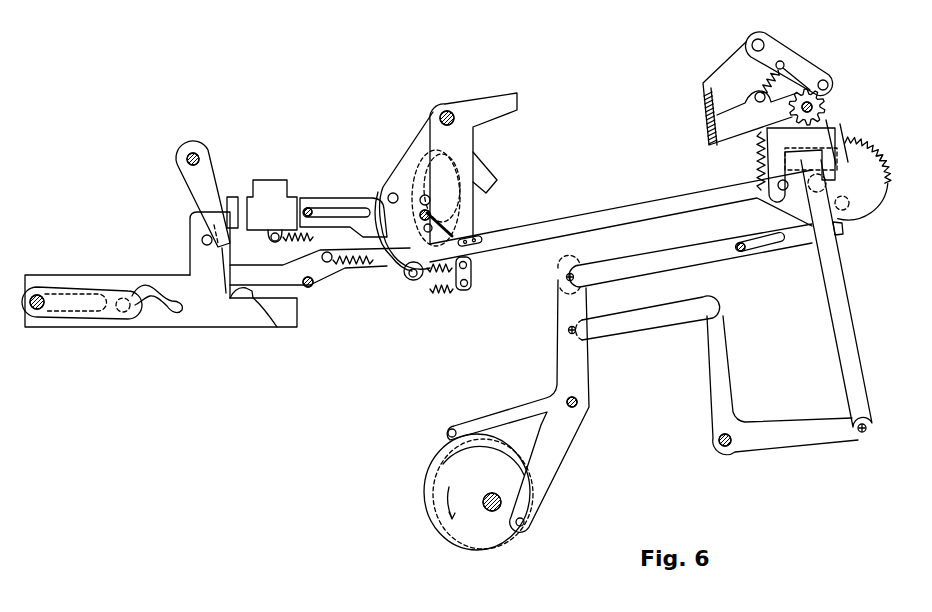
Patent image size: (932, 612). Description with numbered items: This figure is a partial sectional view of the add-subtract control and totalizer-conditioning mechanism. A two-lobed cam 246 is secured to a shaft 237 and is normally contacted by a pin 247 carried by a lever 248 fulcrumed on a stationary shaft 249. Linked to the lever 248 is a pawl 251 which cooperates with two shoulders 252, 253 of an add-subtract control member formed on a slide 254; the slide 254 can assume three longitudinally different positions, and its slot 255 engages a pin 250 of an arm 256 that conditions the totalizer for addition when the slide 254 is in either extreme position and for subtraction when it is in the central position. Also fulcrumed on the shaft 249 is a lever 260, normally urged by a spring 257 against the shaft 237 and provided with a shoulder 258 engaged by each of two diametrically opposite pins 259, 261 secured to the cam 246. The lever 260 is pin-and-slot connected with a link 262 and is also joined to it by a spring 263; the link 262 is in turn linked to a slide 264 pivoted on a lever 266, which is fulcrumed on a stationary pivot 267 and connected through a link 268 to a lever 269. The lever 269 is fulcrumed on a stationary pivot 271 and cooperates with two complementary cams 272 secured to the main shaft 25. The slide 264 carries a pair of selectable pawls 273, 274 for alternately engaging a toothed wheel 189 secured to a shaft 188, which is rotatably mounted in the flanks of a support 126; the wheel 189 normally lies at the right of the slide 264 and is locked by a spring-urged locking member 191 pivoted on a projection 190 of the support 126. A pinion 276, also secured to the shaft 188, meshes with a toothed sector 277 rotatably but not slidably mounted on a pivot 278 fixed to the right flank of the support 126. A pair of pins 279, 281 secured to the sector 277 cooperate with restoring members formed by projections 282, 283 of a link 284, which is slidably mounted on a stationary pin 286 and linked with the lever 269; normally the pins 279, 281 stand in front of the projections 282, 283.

The main shaft 25 is at (487, 511).
The support 126 is at (702, 132).
The shaft 188 is at (761, 102).
The toothed wheel 189 is at (828, 86).
The projection 190 is at (722, 80).
The locking member 191 is at (803, 65).
The shaft 237 is at (430, 215).
The two lobed cam 246 is at (393, 220).
The pin 247 is at (393, 193).
The lever 248 is at (418, 148).
The stationary shaft 249 is at (440, 116).
The pin 250 is at (128, 313).
The pawl 251 is at (313, 283).
The shoulder 252 is at (222, 322).
The shoulder 253 is at (272, 322).
The slide 254 is at (188, 323).
The slot 255 is at (160, 289).
The arm 256 is at (100, 321).
The spring 257 is at (432, 294).
The shoulder 258 is at (455, 235).
The pin 259 is at (475, 247).
The lever 260 is at (458, 144).
The pin 261 is at (431, 200).
The link 262 is at (641, 204).
The spring 263 is at (425, 279).
The slide 264 is at (845, 310).
The lever 266 is at (790, 428).
The stationary pivot 267 is at (729, 447).
The link 268 is at (645, 320).
The lever 269 is at (588, 376).
The stationary pivot 271 is at (578, 405).
The complementary cams 272 is at (425, 507).
The selectable pawl 273 is at (838, 122).
The selectable pawl 274 is at (766, 150).
The pinion 276 is at (828, 115).
The toothed sector 277 is at (863, 197).
The pivot 278 is at (835, 188).
The pin 279 is at (875, 150).
The pin 281 is at (852, 218).
The projection 282 is at (853, 135).
The projection 283 is at (845, 236).
The link 284 is at (667, 266).
The stationary pin 286 is at (743, 251).